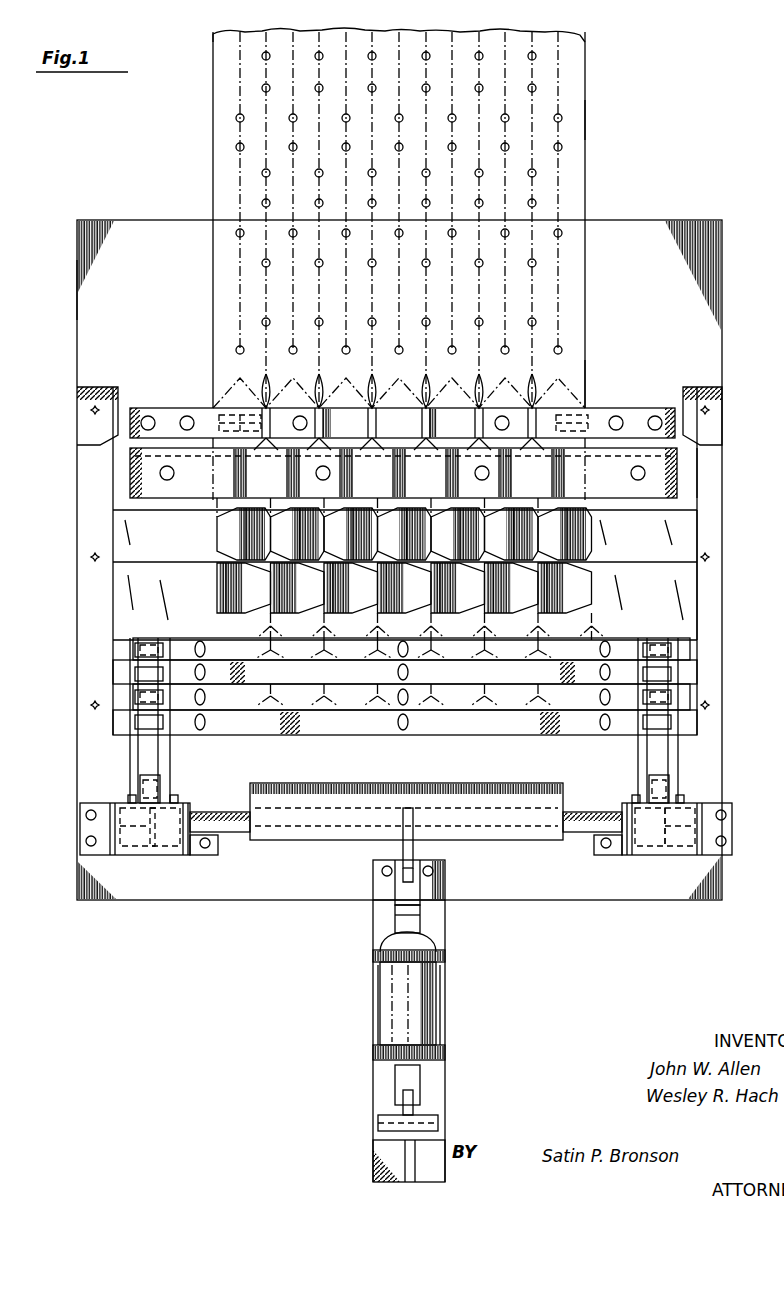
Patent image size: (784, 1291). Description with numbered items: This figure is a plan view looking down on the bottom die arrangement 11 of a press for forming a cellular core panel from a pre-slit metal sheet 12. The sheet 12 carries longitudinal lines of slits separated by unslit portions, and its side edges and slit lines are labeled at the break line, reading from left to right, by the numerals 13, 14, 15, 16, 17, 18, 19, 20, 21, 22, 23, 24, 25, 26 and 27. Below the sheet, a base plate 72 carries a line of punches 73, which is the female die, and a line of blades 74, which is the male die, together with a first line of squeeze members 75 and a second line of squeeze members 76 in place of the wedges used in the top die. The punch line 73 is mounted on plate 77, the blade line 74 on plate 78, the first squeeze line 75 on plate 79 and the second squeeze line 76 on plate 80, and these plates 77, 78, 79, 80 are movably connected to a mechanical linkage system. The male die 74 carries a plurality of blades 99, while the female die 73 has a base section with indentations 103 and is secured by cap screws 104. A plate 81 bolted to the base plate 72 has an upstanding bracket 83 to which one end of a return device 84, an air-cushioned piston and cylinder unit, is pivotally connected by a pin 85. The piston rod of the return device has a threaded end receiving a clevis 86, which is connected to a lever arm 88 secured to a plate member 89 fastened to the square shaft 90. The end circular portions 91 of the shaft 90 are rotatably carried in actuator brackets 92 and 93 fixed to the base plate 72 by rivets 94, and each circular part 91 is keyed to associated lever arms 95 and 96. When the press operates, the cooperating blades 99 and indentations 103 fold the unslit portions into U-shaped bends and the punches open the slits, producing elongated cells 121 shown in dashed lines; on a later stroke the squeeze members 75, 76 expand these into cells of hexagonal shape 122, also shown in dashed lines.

The bottom die arrangement 11 is at (637, 218).
The pre-slit sheet 12 is at (591, 120).
The side edge of the sheet 13 is at (213, 251).
The slit line 14 is at (240, 178).
The slit line 15 is at (266, 226).
The slit line 16 is at (293, 178).
The slit line 17 is at (319, 226).
The slit line 18 is at (346, 178).
The slit line 19 is at (372, 226).
The slit line 20 is at (399, 178).
The slit line 21 is at (426, 226).
The slit line 22 is at (452, 178).
The slit line 23 is at (479, 226).
The slit line 24 is at (505, 178).
The slit line 25 is at (532, 226).
The slit line 26 is at (558, 178).
The side edge of the sheet 27 is at (585, 251).
The base plate 72 is at (100, 292).
The line of punches 73 is at (163, 408).
The line of blades 74 is at (192, 497).
The first line of squeeze members 75 is at (216, 530).
The second line of squeeze members 76 is at (218, 600).
The plate 77 is at (686, 400).
The plate 78 is at (686, 488).
The plate 79 is at (686, 532).
The plate 80 is at (690, 612).
The plate 81 is at (446, 1010).
The upstanding bracket 83 is at (373, 1143).
The return device 84 is at (394, 997).
The pin 85 is at (432, 1097).
The clevis 86 is at (392, 874).
The lever arm 88 is at (419, 850).
The plate member 89 is at (408, 783).
The square shaft 90 is at (598, 812).
The end circular portions 91 is at (174, 857).
The actuator bracket 92 is at (662, 855).
The actuator bracket 93 is at (138, 857).
The rivets 94 is at (82, 841).
The lever arm 95 is at (165, 775).
The lever arm 96 is at (648, 772).
The blades 99 is at (248, 466).
The indentations 103 is at (326, 413).
The cap screws 104 is at (310, 405).
The elongated cells 121 is at (586, 396).
The hexagonal cells 122 is at (596, 622).